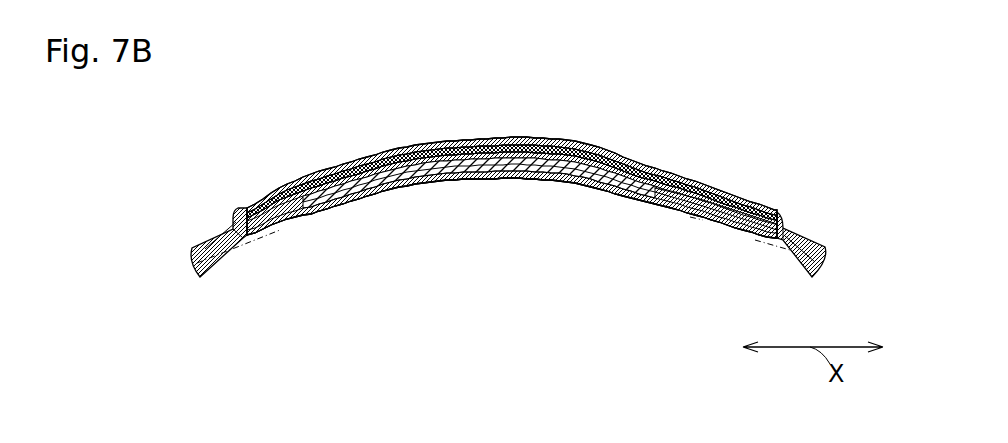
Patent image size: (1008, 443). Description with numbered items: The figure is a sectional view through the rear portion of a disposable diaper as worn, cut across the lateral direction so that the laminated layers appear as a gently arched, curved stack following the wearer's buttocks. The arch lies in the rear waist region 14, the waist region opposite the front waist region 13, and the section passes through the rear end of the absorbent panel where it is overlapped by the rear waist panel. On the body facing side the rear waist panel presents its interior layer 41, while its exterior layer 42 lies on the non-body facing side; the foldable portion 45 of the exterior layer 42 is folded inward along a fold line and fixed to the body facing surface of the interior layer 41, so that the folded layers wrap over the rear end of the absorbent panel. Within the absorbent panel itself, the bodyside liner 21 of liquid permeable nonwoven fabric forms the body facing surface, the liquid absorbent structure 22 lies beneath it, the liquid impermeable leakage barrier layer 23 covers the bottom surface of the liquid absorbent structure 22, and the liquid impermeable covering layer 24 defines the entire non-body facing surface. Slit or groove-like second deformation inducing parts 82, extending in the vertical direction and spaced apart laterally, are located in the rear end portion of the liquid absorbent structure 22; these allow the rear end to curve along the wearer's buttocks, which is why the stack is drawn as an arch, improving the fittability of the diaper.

The front waist region 13 is at (512, 187).
The rear waist region 14 is at (783, 228).
The bodyside liner 21 is at (562, 183).
The liquid absorbent structure 22 is at (560, 148).
The liquid impermeable leakage barrier layer 23 is at (671, 172).
The liquid impermeable covering layer 24 is at (370, 148).
The interior layer 41 is at (443, 148).
The exterior layer 42 is at (483, 148).
The foldable portion 45 is at (512, 183).
The second deformation inducing parts 82 is at (400, 148).